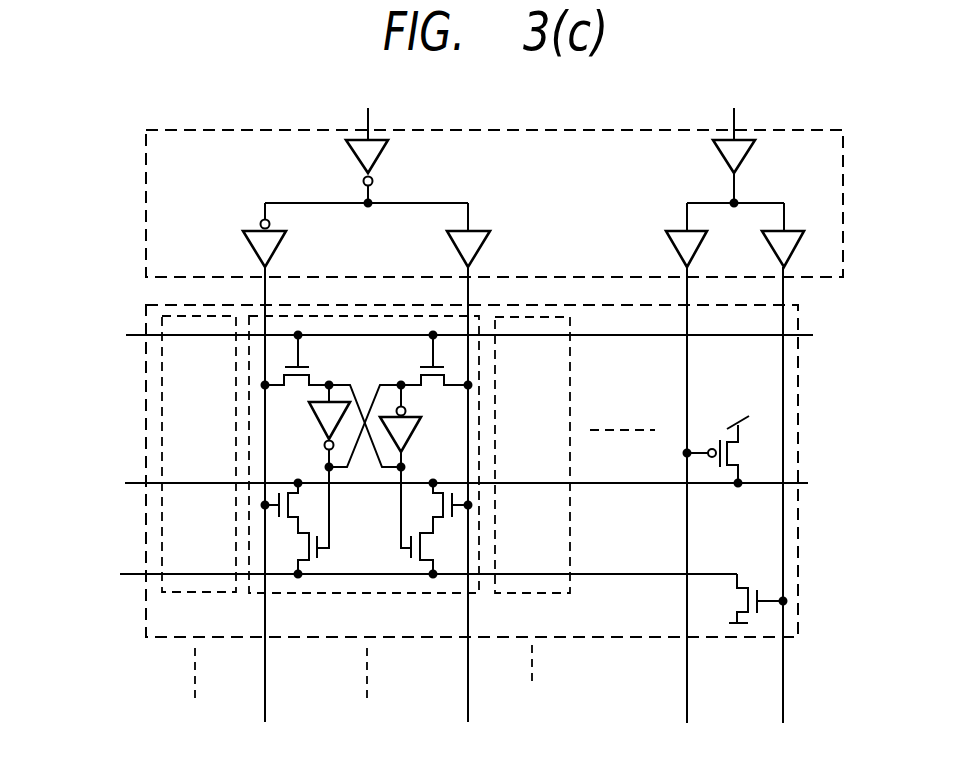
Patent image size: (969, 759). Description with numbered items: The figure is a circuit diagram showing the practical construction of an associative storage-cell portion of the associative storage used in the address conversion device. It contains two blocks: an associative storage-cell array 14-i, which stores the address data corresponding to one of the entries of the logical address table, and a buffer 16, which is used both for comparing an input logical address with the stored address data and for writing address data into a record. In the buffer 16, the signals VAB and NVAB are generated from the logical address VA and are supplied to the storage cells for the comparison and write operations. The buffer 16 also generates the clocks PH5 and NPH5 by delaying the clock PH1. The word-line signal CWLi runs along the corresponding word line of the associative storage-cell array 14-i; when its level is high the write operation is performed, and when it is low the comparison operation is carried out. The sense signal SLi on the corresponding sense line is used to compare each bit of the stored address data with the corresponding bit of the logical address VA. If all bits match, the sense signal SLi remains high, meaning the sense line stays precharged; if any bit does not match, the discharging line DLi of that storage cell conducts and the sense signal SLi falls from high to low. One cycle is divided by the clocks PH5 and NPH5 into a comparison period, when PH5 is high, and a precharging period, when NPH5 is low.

The buffer 16 is at (497, 175).
The associative storage-cell array 14-i is at (798, 322).
The logical address VA is at (368, 108).
The clock PH1 is at (732, 108).
The signal VAB is at (265, 714).
The signal NVAB is at (468, 714).
The clock NPH5 is at (687, 714).
The clock PH5 is at (783, 714).
The word-line signal CWLi is at (435, 333).
The sense signal SLi is at (491, 483).
The discharging line DLi is at (401, 575).